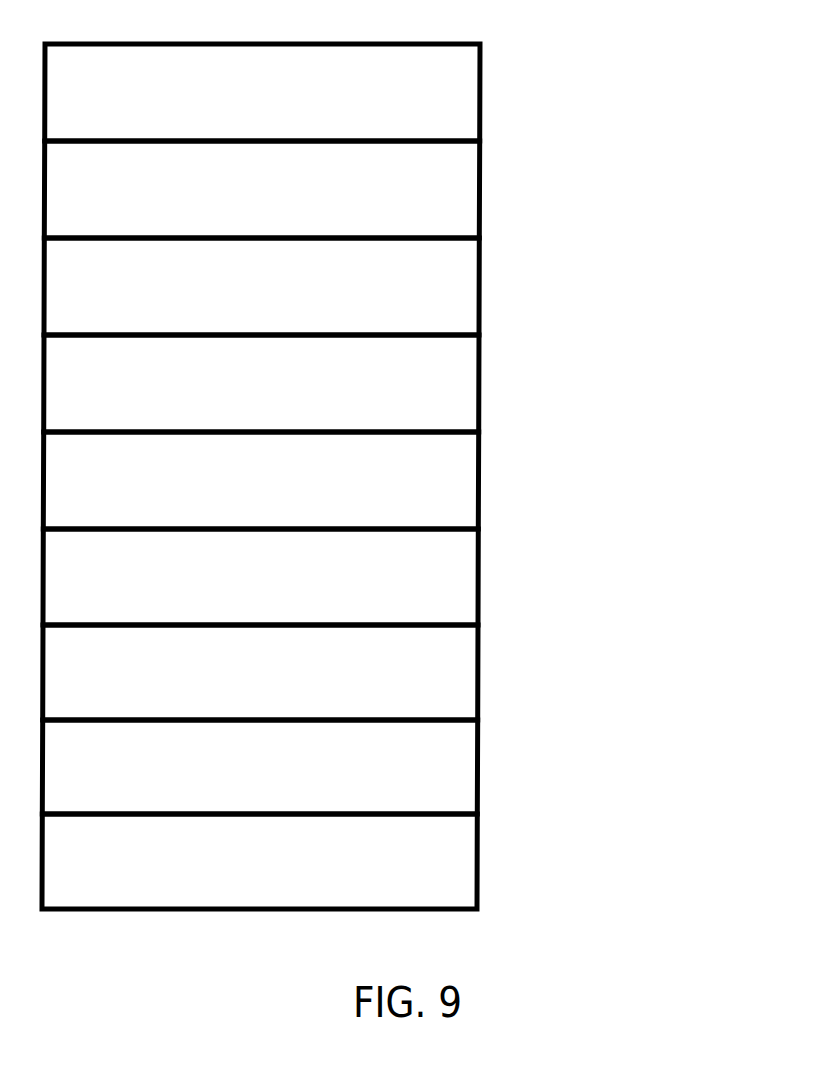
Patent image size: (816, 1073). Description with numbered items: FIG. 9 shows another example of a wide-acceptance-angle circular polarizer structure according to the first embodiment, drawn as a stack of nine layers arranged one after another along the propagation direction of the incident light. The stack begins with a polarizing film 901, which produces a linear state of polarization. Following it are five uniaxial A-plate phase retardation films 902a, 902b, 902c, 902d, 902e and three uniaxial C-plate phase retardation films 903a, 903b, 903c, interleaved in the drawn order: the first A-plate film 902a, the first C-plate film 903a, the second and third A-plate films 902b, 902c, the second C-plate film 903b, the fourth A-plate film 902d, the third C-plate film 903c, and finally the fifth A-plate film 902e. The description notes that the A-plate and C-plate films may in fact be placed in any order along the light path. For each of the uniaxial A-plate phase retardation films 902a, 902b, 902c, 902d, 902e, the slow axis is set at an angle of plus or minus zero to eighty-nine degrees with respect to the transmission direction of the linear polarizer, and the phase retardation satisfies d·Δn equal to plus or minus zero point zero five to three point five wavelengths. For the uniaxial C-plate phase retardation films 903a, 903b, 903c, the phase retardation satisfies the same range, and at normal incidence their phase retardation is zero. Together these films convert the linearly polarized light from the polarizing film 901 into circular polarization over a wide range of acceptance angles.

The polarizing film 901 is at (482, 81).
The uniaxial A-plate phase retardation film 902a is at (482, 192).
The uniaxial C-plate phase retardation film 903a is at (481, 292).
The uniaxial A-plate phase retardation film 902b is at (481, 386).
The uniaxial A-plate phase retardation film 902c is at (480, 484).
The uniaxial C-plate phase retardation film 903b is at (480, 581).
The uniaxial A-plate phase retardation film 902d is at (480, 675).
The uniaxial C-plate phase retardation film 903c is at (480, 769).
The uniaxial A-plate phase retardation film 902e is at (479, 864).